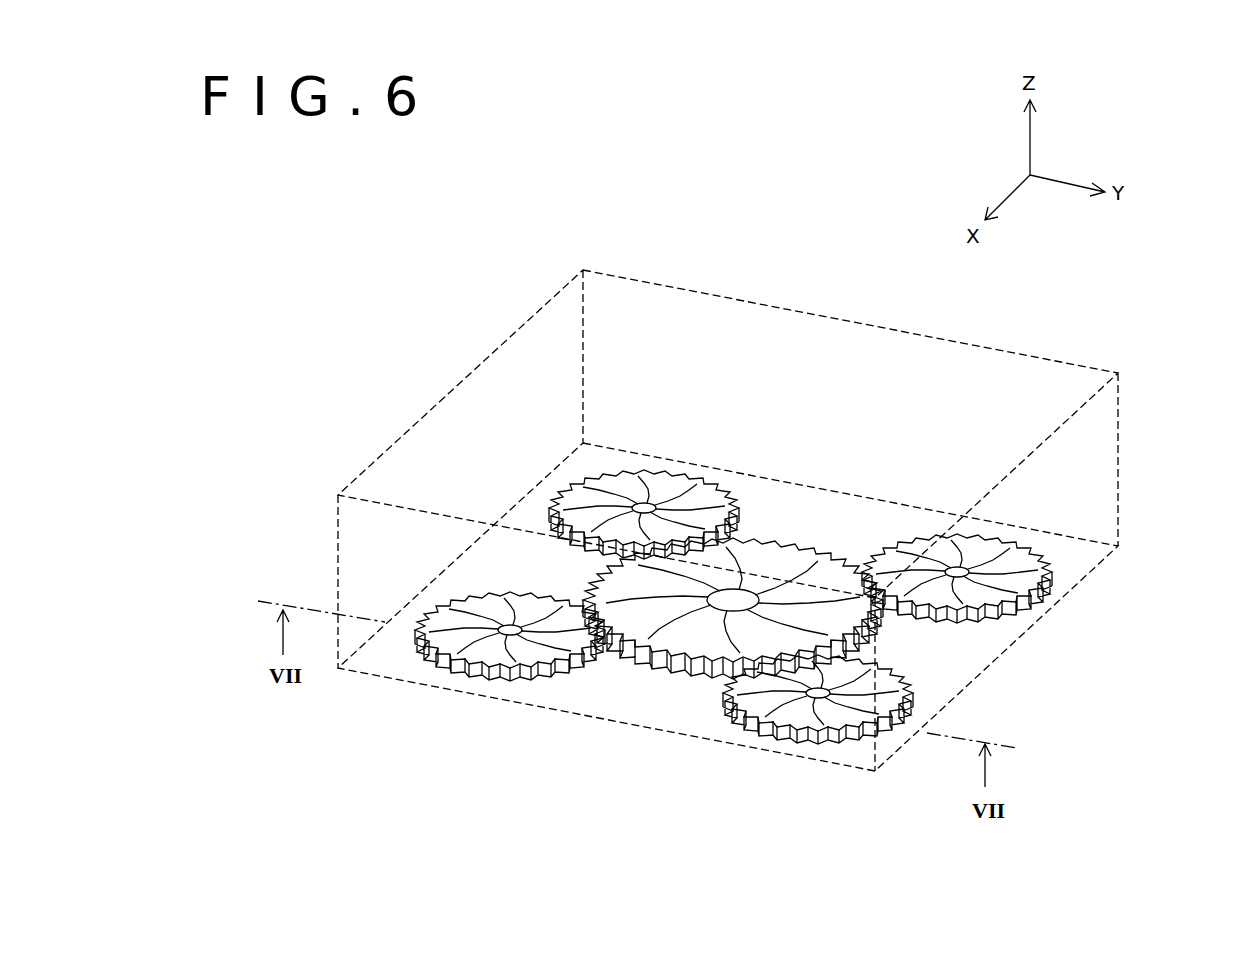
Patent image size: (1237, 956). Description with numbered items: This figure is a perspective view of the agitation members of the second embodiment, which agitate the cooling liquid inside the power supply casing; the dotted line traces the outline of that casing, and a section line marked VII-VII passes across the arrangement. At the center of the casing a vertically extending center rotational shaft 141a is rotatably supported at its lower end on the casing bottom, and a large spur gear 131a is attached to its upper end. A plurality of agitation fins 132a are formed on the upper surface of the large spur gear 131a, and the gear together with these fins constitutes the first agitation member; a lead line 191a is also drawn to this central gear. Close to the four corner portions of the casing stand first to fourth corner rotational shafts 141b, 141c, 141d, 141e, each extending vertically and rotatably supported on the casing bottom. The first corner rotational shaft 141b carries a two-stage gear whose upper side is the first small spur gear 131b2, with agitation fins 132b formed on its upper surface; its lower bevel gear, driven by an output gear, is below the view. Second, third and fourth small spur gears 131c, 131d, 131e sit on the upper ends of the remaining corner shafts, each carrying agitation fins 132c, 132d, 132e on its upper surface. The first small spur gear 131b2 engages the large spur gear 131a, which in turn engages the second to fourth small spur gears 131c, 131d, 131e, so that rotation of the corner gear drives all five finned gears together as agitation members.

The large spur gear 131a is at (757, 642).
The agitation fins 132a is at (640, 607).
The center rotational shaft 141a is at (693, 658).
The hub of gear a 191a is at (800, 573).
The first small spur gear 131b2 is at (440, 665).
The agitation fins 132b is at (460, 648).
The first corner rotational shaft 141b is at (497, 665).
The second small spur gear 131c is at (658, 473).
The agitation fins 132c is at (680, 487).
The second corner rotational shaft 141c is at (610, 475).
The third small spur gear 131d is at (1043, 575).
The agitation fins 132d is at (1045, 558).
The third corner rotational shaft 141d is at (993, 612).
The fourth small spur gear 131e is at (886, 703).
The agitation fins 132e is at (913, 692).
The fourth corner rotational shaft 141e is at (830, 720).